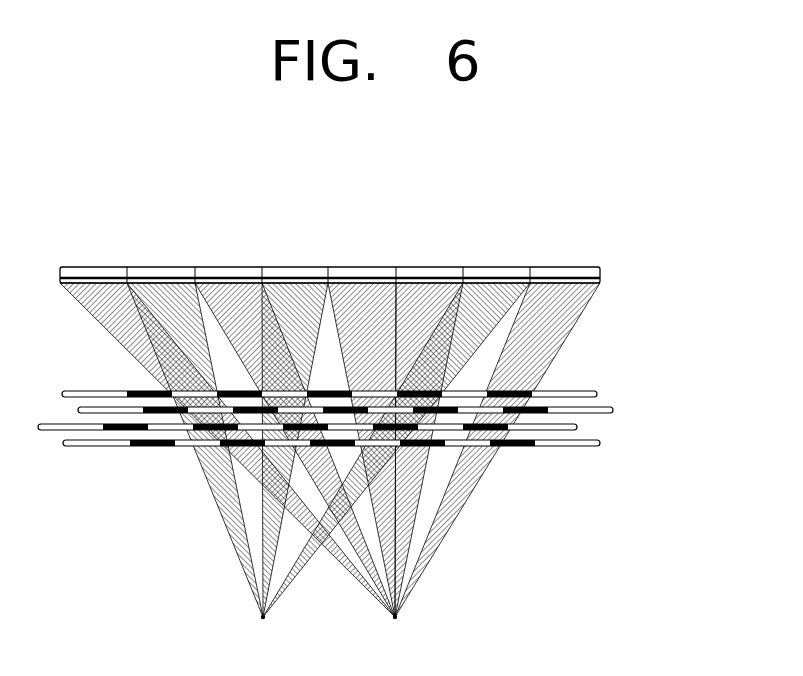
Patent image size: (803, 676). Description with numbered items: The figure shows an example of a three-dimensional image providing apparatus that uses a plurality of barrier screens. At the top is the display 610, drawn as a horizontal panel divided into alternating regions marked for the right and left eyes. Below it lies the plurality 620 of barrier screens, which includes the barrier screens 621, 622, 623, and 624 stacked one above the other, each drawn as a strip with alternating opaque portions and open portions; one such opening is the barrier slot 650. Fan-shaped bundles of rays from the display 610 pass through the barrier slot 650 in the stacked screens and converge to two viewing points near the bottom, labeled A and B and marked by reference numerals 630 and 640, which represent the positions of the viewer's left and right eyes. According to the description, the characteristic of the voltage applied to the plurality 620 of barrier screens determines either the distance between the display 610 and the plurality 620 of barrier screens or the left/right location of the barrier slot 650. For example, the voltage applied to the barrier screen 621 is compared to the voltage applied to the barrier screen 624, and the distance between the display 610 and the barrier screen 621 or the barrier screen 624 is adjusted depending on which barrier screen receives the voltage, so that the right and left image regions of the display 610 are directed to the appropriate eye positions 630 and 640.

The display 610 is at (612, 256).
The plurality of barrier screens 620 is at (402, 417).
The barrier screen 621 is at (597, 394).
The barrier screen 622 is at (613, 410).
The barrier screen 623 is at (577, 427).
The barrier screen 624 is at (381, 456).
The left eye viewpoint A 630 is at (253, 628).
The right eye viewpoint B 640 is at (408, 628).
The barrier slot 650 is at (205, 447).